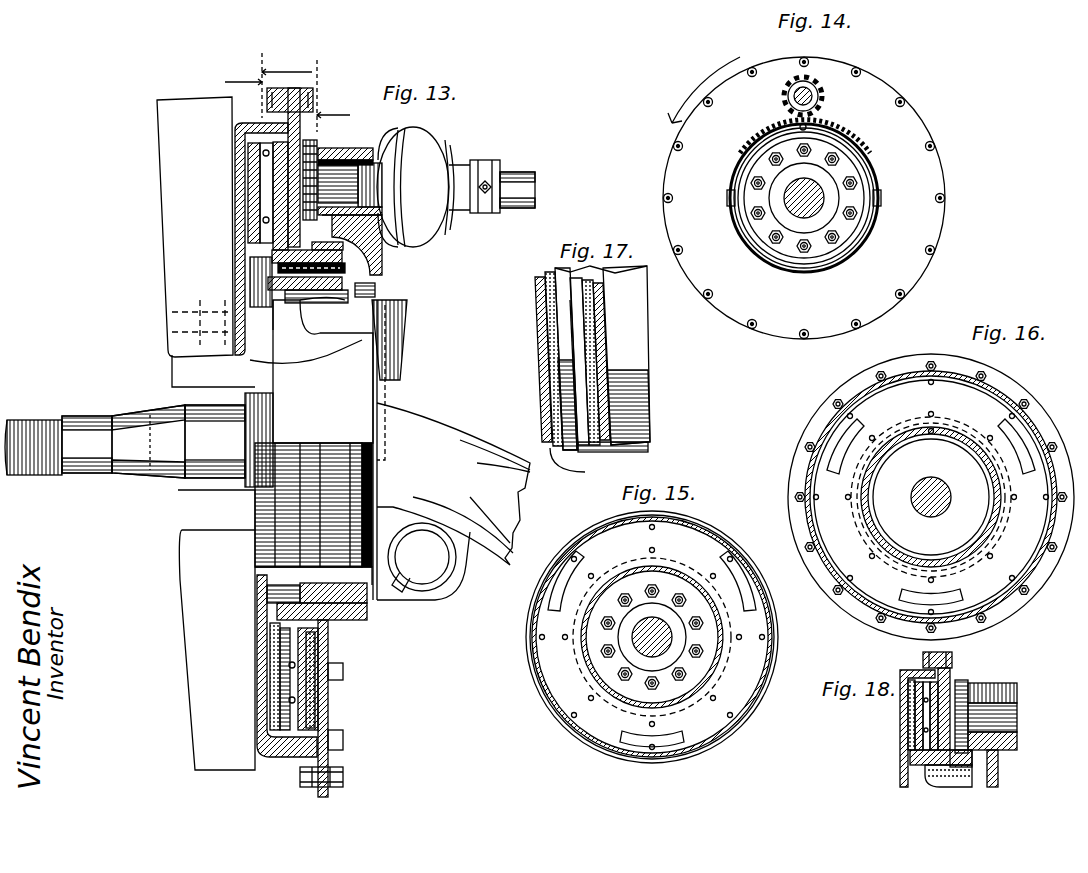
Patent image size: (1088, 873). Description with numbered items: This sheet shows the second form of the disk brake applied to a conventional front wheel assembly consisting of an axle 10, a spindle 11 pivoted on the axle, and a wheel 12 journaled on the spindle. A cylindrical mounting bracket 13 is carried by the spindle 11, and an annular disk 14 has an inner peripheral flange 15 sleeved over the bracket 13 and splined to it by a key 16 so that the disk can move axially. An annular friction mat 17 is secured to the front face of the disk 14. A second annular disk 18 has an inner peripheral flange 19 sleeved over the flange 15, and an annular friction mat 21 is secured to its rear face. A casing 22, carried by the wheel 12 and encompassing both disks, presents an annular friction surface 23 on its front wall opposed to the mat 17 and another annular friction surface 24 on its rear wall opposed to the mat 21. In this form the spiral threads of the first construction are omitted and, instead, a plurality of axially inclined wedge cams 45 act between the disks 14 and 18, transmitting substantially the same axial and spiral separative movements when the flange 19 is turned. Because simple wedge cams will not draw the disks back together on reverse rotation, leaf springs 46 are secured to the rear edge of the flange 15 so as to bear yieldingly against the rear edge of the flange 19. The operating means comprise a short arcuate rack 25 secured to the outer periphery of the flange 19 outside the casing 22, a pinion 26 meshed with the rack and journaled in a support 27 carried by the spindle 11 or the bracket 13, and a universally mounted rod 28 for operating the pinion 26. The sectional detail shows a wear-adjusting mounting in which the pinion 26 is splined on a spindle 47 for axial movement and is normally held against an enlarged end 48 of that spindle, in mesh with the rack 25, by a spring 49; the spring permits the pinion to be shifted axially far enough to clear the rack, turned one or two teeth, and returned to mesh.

In FIG. 13, the axle 10 is at (520, 500).
In FIG. 13, the spindle 11 is at (340, 393).
In FIG. 14, the spindle 11 is at (825, 199).
In FIG. 16, the spindle 11 is at (950, 490).
In FIG. 15, the spindle 11 is at (675, 640).
In FIG. 13, the wheel 12 is at (188, 610).
In FIG. 13, the cylindrical mounting bracket 13 is at (345, 265).
In FIG. 14, the cylindrical mounting bracket 13 is at (865, 150).
In FIG. 16, the cylindrical mounting bracket 13 is at (940, 432).
In FIG. 13, the annular disk 14 is at (367, 705).
In FIG. 17, the annular disk 14 is at (558, 305).
In FIG. 15, the annular disk 14 is at (755, 627).
In FIG. 18, the annular disk 14 is at (912, 712).
In FIG. 13, the inner peripheral flange 15 is at (355, 785).
In FIG. 17, the inner peripheral flange 15 is at (648, 450).
In FIG. 14, the inner peripheral flange 15 is at (868, 232).
In FIG. 16, the inner peripheral flange 15 is at (1000, 512).
In FIG. 15, the inner peripheral flange 15 is at (665, 570).
In FIG. 13, the key 16 is at (296, 786).
In FIG. 14, the key 16 is at (790, 125).
In FIG. 16, the key 16 is at (938, 427).
In FIG. 18, the key 16 is at (925, 778).
In FIG. 13, the annular friction mat 17 is at (370, 738).
In FIG. 17, the annular friction mat 17 is at (562, 367).
In FIG. 15, the annular friction mat 17 is at (725, 668).
In FIG. 18, the annular friction mat 17 is at (930, 745).
In FIG. 13, the annular disk 18 is at (315, 712).
In FIG. 17, the annular disk 18 is at (580, 300).
In FIG. 16, the annular disk 18 is at (1012, 560).
In FIG. 18, the annular disk 18 is at (920, 737).
In FIG. 13, the inner peripheral flange 19 is at (365, 618).
In FIG. 17, the inner peripheral flange 19 is at (625, 385).
In FIG. 14, the inner peripheral flange 19 is at (875, 178).
In FIG. 13, the annular friction mat 21 is at (323, 640).
In FIG. 17, the annular friction mat 21 is at (598, 345).
In FIG. 16, the annular friction mat 21 is at (822, 570).
In FIG. 18, the annular friction mat 21 is at (925, 762).
In FIG. 13, the casing 22 is at (265, 716).
In FIG. 17, the casing 22 is at (600, 455).
In FIG. 14, the casing 22 is at (893, 92).
In FIG. 16, the casing 22 is at (1030, 412).
In FIG. 15, the casing 22 is at (718, 540).
In FIG. 18, the casing 22 is at (920, 670).
In FIG. 13, the annular friction surface 23 is at (270, 662).
In FIG. 13, the annular friction surface 24 is at (312, 660).
In FIG. 13, the arcuate rack 25 is at (370, 185).
In FIG. 14, the arcuate rack 25 is at (835, 122).
In FIG. 18, the arcuate rack 25 is at (972, 757).
In FIG. 13, the pinion 26 is at (340, 147).
In FIG. 14, the pinion 26 is at (825, 95).
In FIG. 18, the pinion 26 is at (978, 688).
In FIG. 13, the support 27 is at (375, 288).
In FIG. 18, the support 27 is at (1012, 740).
In FIG. 13, the universally mounted rod 28 is at (515, 172).
In FIG. 13, the axially inclined cams 45 is at (315, 690).
In FIG. 17, the axially inclined cams 45 is at (615, 412).
In FIG. 16, the axially inclined cams 45 is at (948, 596).
In FIG. 15, the axially inclined cams 45 is at (672, 738).
In FIG. 14, the leaf springs 46 is at (882, 198).
In FIG. 18, the spindle 47 is at (1010, 712).
In FIG. 18, the enlarged end 48 is at (960, 682).
In FIG. 18, the spring 49 is at (998, 760).